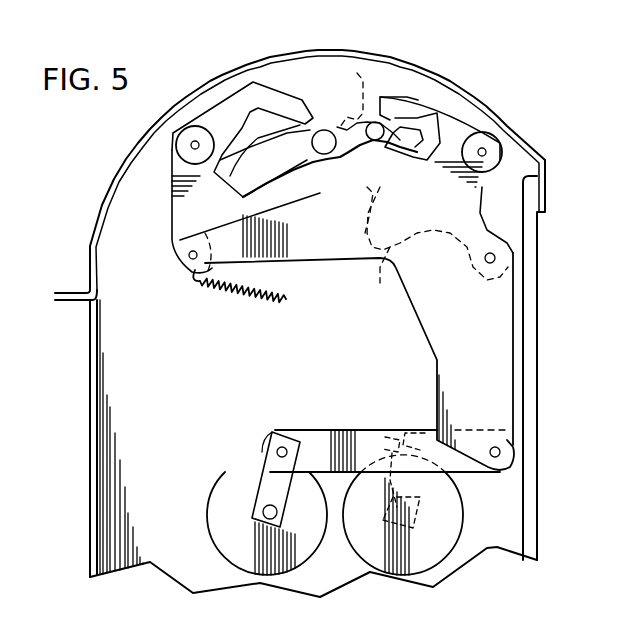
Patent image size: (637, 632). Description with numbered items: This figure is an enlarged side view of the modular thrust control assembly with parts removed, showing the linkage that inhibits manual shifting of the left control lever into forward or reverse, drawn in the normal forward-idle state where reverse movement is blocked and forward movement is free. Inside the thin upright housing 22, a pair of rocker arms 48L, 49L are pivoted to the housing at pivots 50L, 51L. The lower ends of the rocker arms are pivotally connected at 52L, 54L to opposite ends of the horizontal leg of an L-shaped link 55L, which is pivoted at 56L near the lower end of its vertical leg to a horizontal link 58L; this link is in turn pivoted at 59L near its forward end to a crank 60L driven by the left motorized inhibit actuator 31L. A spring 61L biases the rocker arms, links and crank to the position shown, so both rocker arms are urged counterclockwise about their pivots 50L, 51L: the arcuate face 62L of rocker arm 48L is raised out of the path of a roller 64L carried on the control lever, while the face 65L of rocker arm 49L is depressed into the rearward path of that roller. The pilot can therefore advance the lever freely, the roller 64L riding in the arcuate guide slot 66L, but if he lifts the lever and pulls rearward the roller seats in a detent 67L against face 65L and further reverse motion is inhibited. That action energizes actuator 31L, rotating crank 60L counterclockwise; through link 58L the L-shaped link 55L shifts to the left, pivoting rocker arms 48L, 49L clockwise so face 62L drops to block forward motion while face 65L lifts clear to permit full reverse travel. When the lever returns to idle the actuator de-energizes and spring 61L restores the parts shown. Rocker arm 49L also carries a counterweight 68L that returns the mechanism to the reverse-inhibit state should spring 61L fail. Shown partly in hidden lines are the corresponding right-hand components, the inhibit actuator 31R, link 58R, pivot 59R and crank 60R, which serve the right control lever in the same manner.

The housing 22 is at (88, 398).
The motorized inhibit actuator 31L is at (221, 502).
The inhibit actuator 31R is at (440, 540).
The rocker arm 48L is at (238, 107).
The rocker arm 49L is at (443, 120).
The pivot 50L is at (190, 145).
The pivot 51L is at (484, 150).
The pivotal connection 52L is at (187, 257).
The pivotal connection 54L is at (495, 258).
The L-shaped link 55L is at (424, 283).
The pivot 56L is at (500, 452).
The link 58L is at (312, 438).
The link 58R is at (392, 430).
The pivot 59L is at (277, 447).
The pivot 59R is at (418, 433).
The crank 60L is at (267, 477).
The crank 60R is at (443, 493).
The spring 61L is at (240, 297).
The face 62L is at (325, 129).
The roller 64L is at (374, 122).
The face 65L is at (373, 125).
The arcuate guide slot 66L is at (291, 158).
The detent 67L is at (380, 147).
The counterweight 68L is at (382, 263).